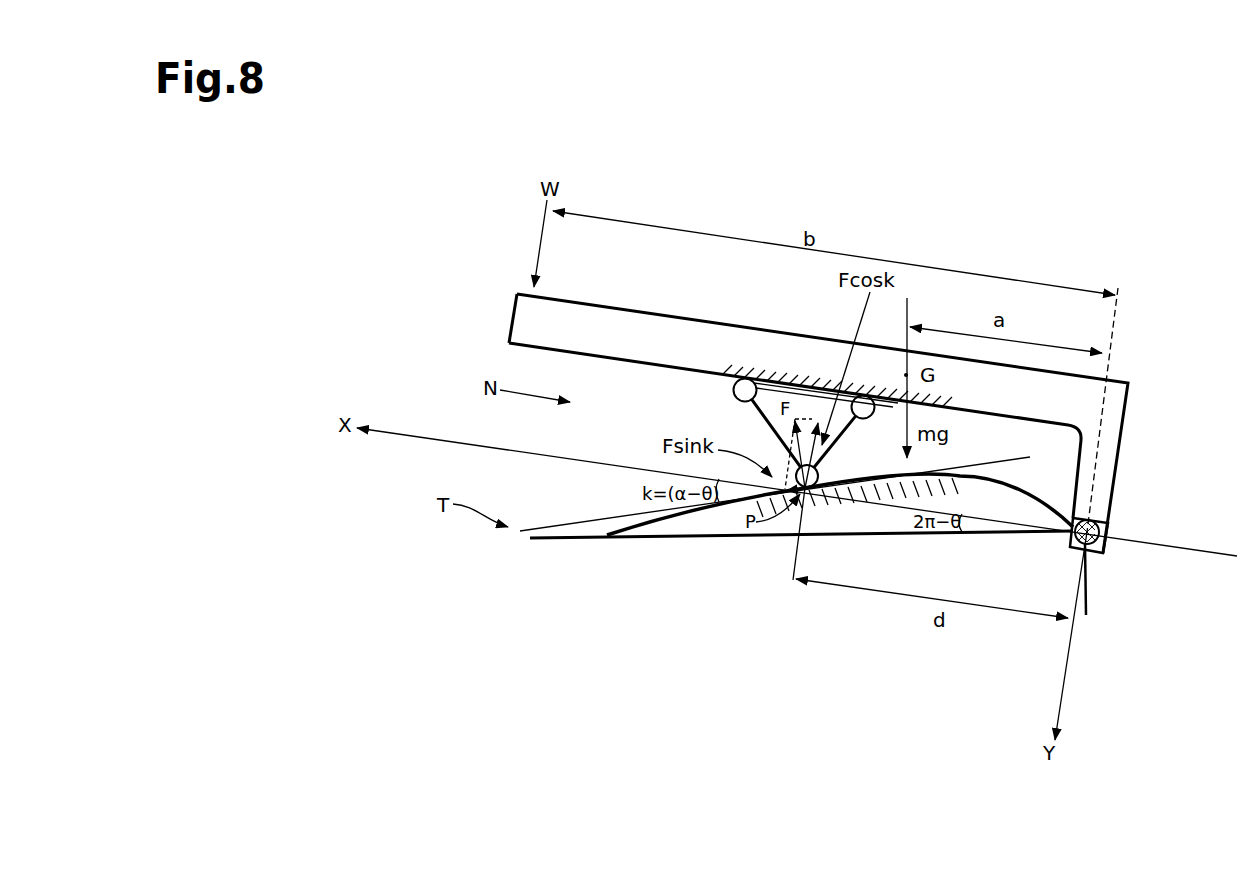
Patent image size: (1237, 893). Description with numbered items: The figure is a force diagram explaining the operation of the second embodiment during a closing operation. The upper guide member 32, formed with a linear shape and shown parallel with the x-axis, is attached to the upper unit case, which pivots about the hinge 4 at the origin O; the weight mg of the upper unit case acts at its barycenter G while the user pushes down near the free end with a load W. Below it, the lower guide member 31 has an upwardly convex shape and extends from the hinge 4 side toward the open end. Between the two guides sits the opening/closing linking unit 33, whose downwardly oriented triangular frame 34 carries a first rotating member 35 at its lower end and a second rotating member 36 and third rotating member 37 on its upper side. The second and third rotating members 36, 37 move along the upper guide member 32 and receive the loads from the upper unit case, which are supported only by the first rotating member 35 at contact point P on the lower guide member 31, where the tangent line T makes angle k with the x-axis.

The hinge 4 is at (1097, 527).
The lower guide member 31 is at (620, 524).
The upper guide member 32 is at (652, 368).
The opening/closing linking unit 33 is at (848, 456).
The frame 34 is at (848, 456).
The first rotating member 35 is at (819, 491).
The second rotating member 36 is at (871, 394).
The third rotating member 37 is at (745, 371).